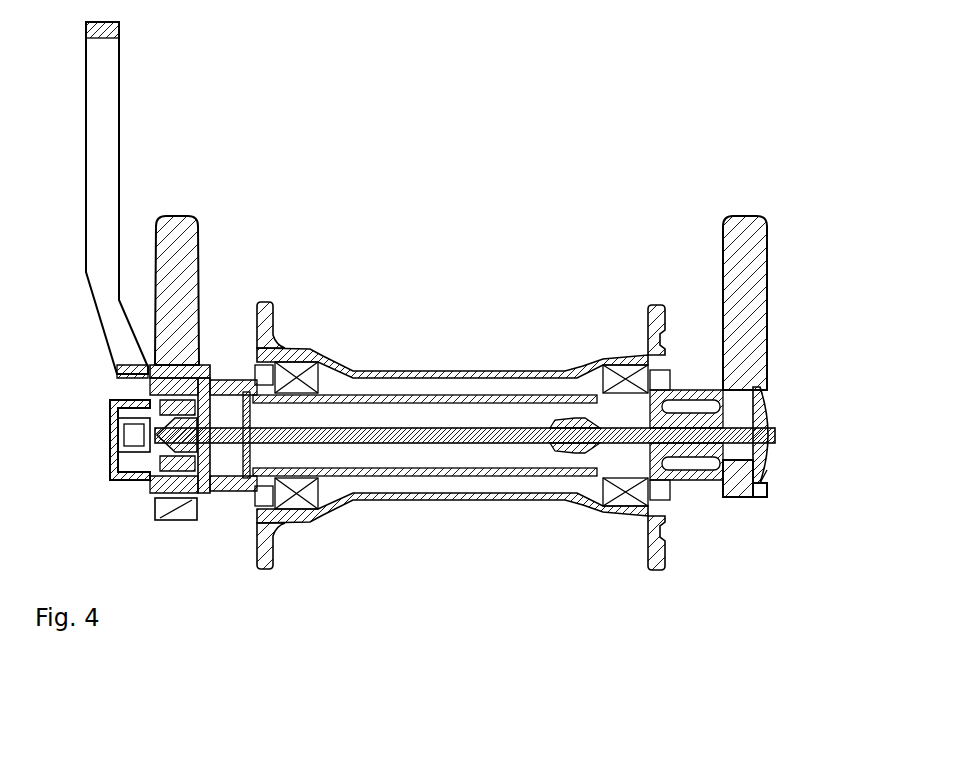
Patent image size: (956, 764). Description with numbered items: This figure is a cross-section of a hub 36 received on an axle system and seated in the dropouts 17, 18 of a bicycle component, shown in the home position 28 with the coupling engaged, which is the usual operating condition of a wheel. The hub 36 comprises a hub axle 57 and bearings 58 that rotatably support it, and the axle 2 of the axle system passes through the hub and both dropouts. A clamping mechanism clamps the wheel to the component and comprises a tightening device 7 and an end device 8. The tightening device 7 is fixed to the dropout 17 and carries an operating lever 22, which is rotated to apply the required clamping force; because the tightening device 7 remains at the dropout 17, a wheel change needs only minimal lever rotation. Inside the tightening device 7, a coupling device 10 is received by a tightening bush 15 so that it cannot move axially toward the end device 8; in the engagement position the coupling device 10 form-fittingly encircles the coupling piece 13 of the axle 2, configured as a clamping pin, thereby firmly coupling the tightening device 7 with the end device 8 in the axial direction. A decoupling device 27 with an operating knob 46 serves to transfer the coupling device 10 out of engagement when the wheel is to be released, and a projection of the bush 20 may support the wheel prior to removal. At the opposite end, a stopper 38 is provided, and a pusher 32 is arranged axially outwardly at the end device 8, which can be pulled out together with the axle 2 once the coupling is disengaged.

The axle 2 is at (459, 427).
The tightening device 7 is at (150, 432).
The end device 8 is at (769, 414).
The coupling device 10 is at (178, 502).
The coupling piece 13 is at (128, 428).
The tightening bush 15 is at (158, 492).
The dropout 17 is at (190, 240).
The dropout 18 is at (735, 232).
The bush 20 is at (207, 357).
The operating lever 22 is at (107, 75).
The decoupling device 27 is at (112, 470).
The home position 28 is at (459, 345).
The pusher 32 is at (768, 466).
The hub 36 is at (425, 371).
The stopper 38 is at (687, 388).
The operating knob 46 is at (120, 448).
The hub axle 57 is at (363, 392).
The bearings 58 is at (298, 370).